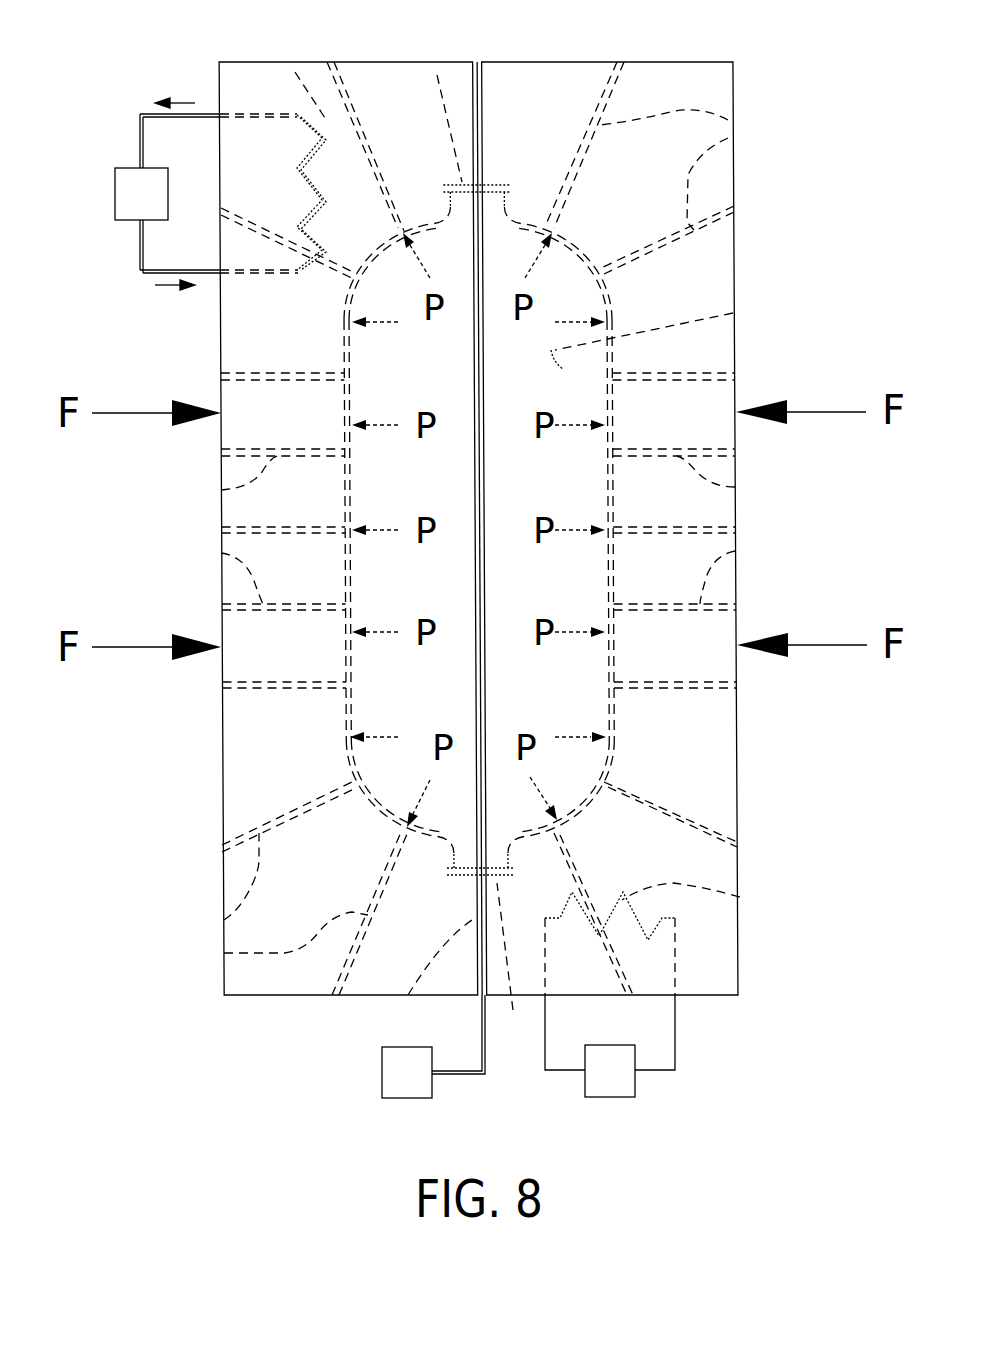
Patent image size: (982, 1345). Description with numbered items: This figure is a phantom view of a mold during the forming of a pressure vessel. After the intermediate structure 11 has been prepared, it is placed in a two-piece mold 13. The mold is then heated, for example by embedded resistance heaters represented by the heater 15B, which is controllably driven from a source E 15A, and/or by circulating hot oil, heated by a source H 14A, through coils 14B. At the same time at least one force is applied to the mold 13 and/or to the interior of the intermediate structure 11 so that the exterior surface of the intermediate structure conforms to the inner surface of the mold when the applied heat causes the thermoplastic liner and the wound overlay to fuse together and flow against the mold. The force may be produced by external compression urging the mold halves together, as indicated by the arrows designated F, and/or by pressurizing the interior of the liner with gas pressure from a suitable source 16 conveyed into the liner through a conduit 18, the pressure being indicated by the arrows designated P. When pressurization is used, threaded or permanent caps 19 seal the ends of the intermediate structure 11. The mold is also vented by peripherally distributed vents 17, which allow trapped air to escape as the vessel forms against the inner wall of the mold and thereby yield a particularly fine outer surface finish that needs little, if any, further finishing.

The intermediate structure 11 is at (733, 312).
The mold 13 is at (210, 757).
The source H 14A is at (115, 187).
The coils 14B is at (292, 62).
The source E 15A is at (623, 1097).
The heater 15B is at (739, 896).
The source 16 is at (382, 1077).
The vents 17 is at (221, 553).
The conduit 18 is at (483, 1013).
The caps 19 is at (435, 62).